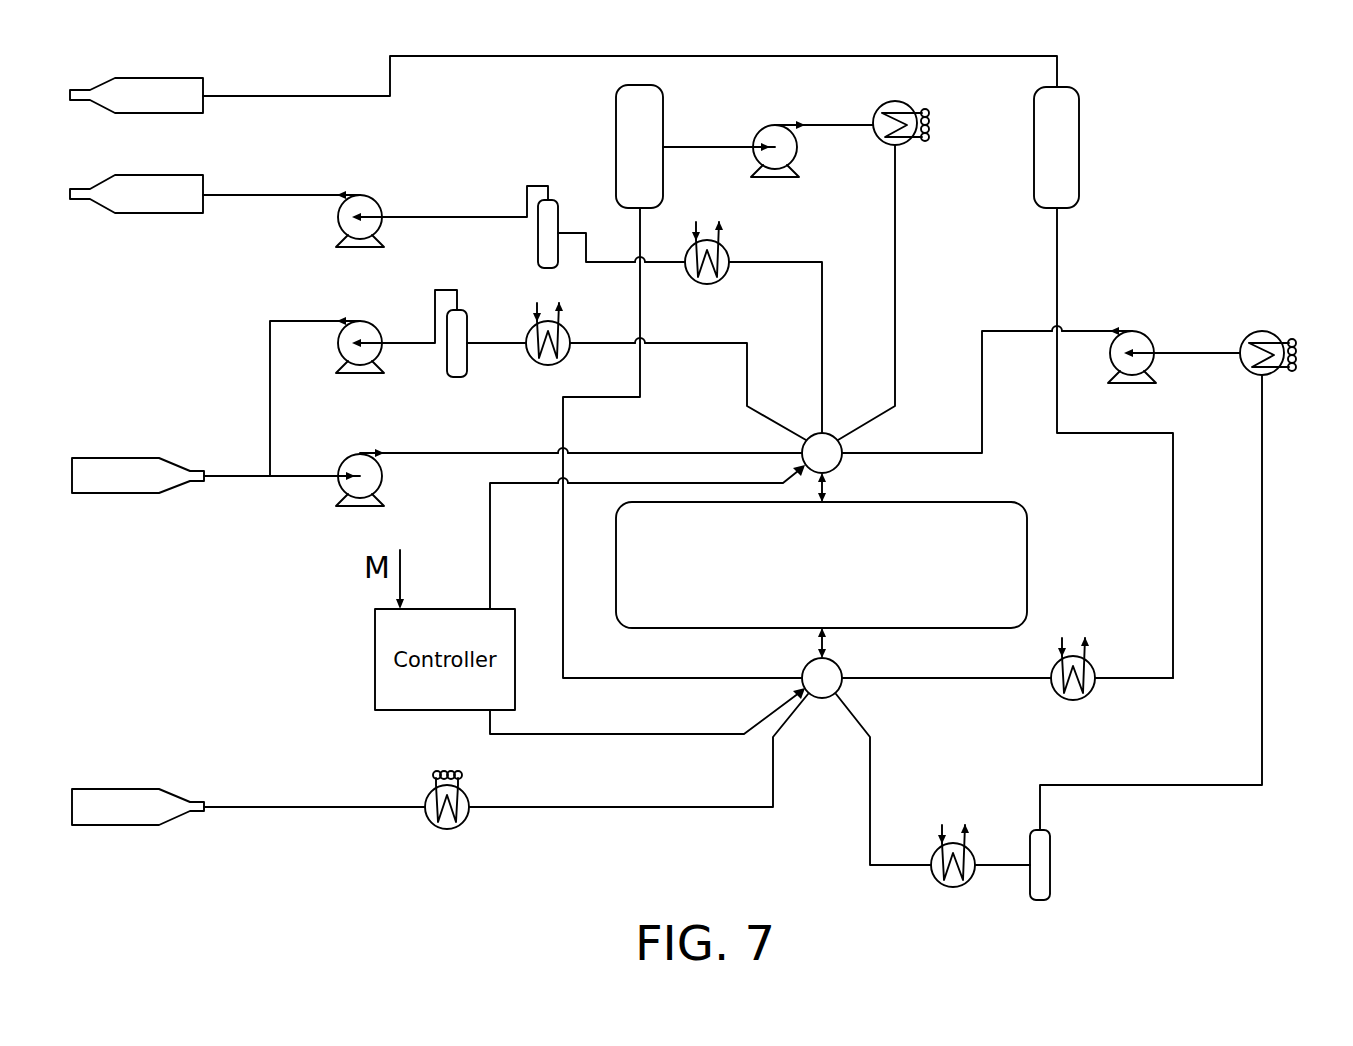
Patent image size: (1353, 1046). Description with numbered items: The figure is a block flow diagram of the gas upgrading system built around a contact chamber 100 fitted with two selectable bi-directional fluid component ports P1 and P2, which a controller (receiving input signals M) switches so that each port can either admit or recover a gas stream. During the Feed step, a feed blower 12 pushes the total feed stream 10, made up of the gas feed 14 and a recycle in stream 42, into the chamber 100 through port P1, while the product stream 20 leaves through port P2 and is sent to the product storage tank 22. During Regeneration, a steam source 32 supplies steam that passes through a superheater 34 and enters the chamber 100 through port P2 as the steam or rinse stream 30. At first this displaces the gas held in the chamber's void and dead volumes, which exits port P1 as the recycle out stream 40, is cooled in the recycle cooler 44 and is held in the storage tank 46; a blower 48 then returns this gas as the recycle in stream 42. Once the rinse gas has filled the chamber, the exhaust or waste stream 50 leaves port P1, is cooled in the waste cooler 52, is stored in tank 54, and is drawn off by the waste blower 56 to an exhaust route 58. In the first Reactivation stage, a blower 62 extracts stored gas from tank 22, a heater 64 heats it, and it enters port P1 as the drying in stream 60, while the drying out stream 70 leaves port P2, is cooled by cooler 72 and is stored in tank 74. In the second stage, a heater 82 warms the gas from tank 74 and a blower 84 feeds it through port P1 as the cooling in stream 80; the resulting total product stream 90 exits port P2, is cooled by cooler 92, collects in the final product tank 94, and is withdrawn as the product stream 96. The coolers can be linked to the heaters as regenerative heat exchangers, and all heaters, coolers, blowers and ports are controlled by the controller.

The total feed stream 10 is at (741, 452).
The feed blower 12 is at (382, 479).
The gas feed 14 is at (114, 458).
The product stream 20 is at (757, 680).
The product storage tank 22 is at (616, 122).
The steam or rinse stream 30 is at (775, 755).
The steam source 32 is at (114, 789).
The superheater 34 is at (455, 829).
The recycle out stream 40 is at (747, 387).
The recycle in stream 42 is at (270, 385).
The recycle cooler 44 is at (567, 327).
The storage tank 46 is at (457, 377).
The blower 48 is at (374, 329).
The exhaust or waste stream 50 is at (822, 387).
The waste cooler 52 is at (724, 247).
The tank 54 is at (538, 247).
The waste blower 56 is at (374, 203).
The exhaust route 58 is at (172, 175).
The drying in stream 60 is at (895, 387).
The blower 62 is at (797, 152).
The heater 64 is at (910, 140).
The drying out stream 70 is at (872, 755).
The cooler 72 is at (970, 850).
The tank 74 is at (1050, 863).
The cooling in stream 80 is at (905, 452).
The heater 82 is at (1280, 371).
The blower 84 is at (1148, 336).
The total product stream 90 is at (886, 680).
The cooler 92 is at (1092, 663).
The final product tank 94 is at (1079, 163).
The product stream 96 is at (172, 78).
The chamber 100 is at (850, 571).
The selectable bi-directional fluid component port P1 is at (828, 461).
The selectable bi-directional fluid component port P2 is at (828, 668).